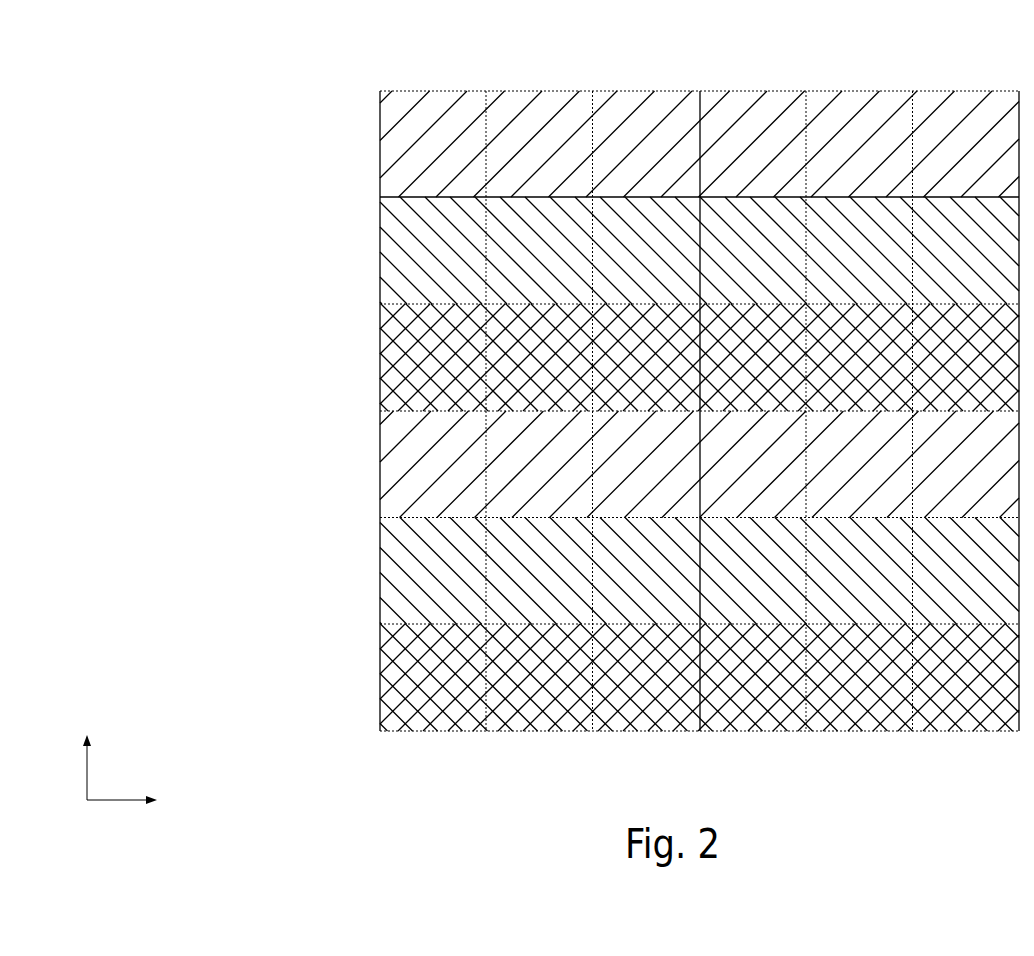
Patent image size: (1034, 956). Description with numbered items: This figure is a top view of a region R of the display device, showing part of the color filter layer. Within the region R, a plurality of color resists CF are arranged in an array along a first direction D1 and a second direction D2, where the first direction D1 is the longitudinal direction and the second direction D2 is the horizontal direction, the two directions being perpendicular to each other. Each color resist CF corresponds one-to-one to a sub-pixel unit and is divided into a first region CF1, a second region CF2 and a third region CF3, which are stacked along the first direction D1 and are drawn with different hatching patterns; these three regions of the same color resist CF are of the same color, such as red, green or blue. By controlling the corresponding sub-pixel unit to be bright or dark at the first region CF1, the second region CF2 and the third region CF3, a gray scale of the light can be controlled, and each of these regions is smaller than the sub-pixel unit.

The region R is at (604, 365).
The color resist CF is at (624, 251).
The first region CF1 is at (380, 144).
The second region CF2 is at (380, 252).
The third region CF3 is at (653, 357).
The first direction D1 is at (85, 748).
The second direction D2 is at (143, 800).